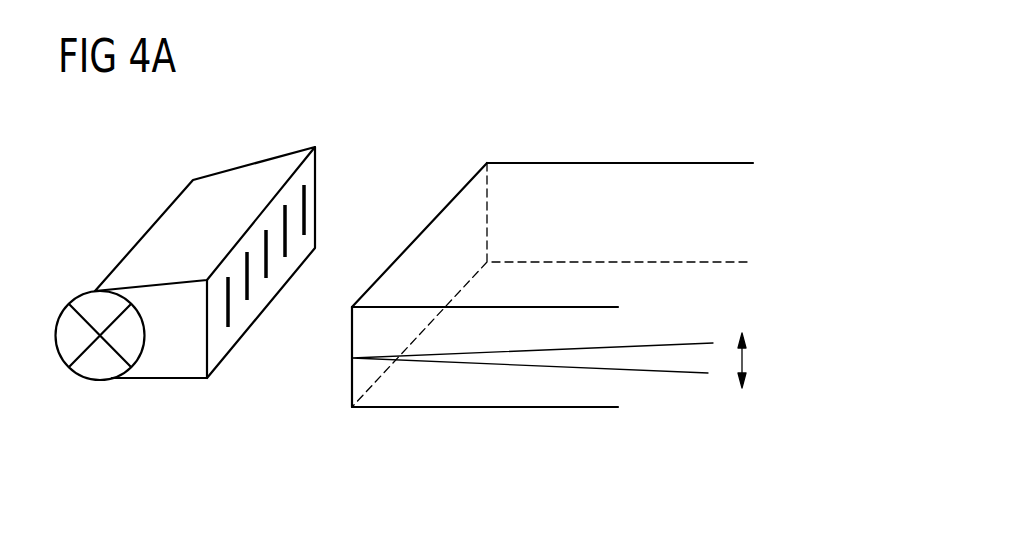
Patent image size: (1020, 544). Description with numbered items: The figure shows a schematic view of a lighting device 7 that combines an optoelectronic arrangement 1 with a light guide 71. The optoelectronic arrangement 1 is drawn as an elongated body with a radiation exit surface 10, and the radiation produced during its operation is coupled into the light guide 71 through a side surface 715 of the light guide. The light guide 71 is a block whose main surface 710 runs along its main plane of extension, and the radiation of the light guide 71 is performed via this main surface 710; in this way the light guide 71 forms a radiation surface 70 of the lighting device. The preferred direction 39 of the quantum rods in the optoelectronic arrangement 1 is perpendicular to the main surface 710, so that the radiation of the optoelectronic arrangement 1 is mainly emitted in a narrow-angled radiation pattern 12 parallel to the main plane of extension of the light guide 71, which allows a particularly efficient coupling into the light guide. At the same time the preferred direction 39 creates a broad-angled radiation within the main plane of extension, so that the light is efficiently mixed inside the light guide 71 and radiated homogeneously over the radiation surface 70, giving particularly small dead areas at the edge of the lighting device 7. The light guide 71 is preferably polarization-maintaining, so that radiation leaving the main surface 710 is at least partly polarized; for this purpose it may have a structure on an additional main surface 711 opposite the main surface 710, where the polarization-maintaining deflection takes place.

The optoelectronic arrangement 1 is at (294, 123).
The preferred direction 39 is at (307, 207).
The radiation exit surface 10 is at (241, 313).
The lighting device 7 is at (752, 103).
The radiation surface 70 is at (658, 153).
The main surface 710 is at (540, 153).
The side surface 715 is at (345, 384).
The light guide 71 is at (548, 395).
The additional main surface 711 is at (455, 413).
The narrow-angled radiation pattern 12 is at (712, 360).